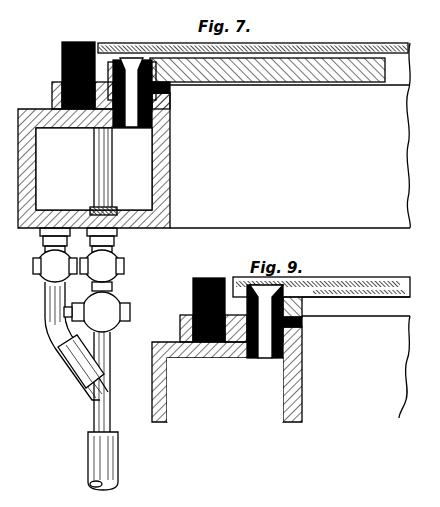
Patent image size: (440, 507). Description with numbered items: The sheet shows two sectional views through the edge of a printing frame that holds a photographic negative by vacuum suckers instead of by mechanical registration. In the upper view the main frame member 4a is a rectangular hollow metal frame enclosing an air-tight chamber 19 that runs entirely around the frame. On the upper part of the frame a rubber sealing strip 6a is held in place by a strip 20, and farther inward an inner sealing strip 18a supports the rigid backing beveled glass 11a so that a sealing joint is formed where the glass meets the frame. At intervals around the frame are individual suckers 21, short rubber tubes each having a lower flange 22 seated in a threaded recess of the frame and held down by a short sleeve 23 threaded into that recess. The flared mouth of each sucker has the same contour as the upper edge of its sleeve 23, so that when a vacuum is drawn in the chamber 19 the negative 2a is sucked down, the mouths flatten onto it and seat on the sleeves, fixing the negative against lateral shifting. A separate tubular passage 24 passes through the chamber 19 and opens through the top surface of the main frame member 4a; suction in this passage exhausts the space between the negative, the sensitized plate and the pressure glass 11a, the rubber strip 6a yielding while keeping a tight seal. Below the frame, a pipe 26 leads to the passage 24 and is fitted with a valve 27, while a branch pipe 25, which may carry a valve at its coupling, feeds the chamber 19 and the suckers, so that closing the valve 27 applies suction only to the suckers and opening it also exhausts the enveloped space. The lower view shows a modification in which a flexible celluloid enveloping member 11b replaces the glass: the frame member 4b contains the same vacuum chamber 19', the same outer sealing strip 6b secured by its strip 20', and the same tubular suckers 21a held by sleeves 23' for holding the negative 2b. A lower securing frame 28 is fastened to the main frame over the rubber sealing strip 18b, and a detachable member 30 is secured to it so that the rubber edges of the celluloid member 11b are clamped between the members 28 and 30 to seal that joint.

In FIG. 7, the negative 2a is at (330, 52).
In FIG. 9, the negative 2b is at (381, 283).
In FIG. 7, the main frame member 4a is at (167, 162).
In FIG. 9, the main frame member 4b is at (163, 400).
In FIG. 7, the sealing strip 6a is at (62, 56).
In FIG. 9, the outer sealing strip 6b is at (194, 287).
In FIG. 7, the beveled glass 11a is at (314, 74).
In FIG. 9, the celluloid enveloping member 11b is at (392, 297).
In FIG. 7, the inner sealing strip 18a is at (170, 88).
In FIG. 9, the rubber sealing strip 18b is at (301, 322).
In FIG. 7, the air-tight chamber 19 is at (94, 169).
In FIG. 9, the vacuum chamber 19' is at (225, 390).
In FIG. 7, the strip 20 is at (60, 85).
In FIG. 9, the strip 20' is at (201, 318).
In FIG. 7, the individual sucker 21 is at (128, 58).
In FIG. 9, the tubular sucker 21a is at (262, 285).
In FIG. 7, the lower flange 22 is at (148, 107).
In FIG. 7, the sleeve 23 is at (138, 55).
In FIG. 9, the sleeve 23' is at (254, 346).
In FIG. 7, the tubular passage 24 is at (103, 168).
In FIG. 7, the pipe 25 is at (76, 360).
In FIG. 7, the pipe 26 is at (60, 264).
In FIG. 7, the valve 27 is at (70, 324).
In FIG. 9, the securing frame 28 is at (298, 307).
In FIG. 9, the detachable securing member 30 is at (306, 284).